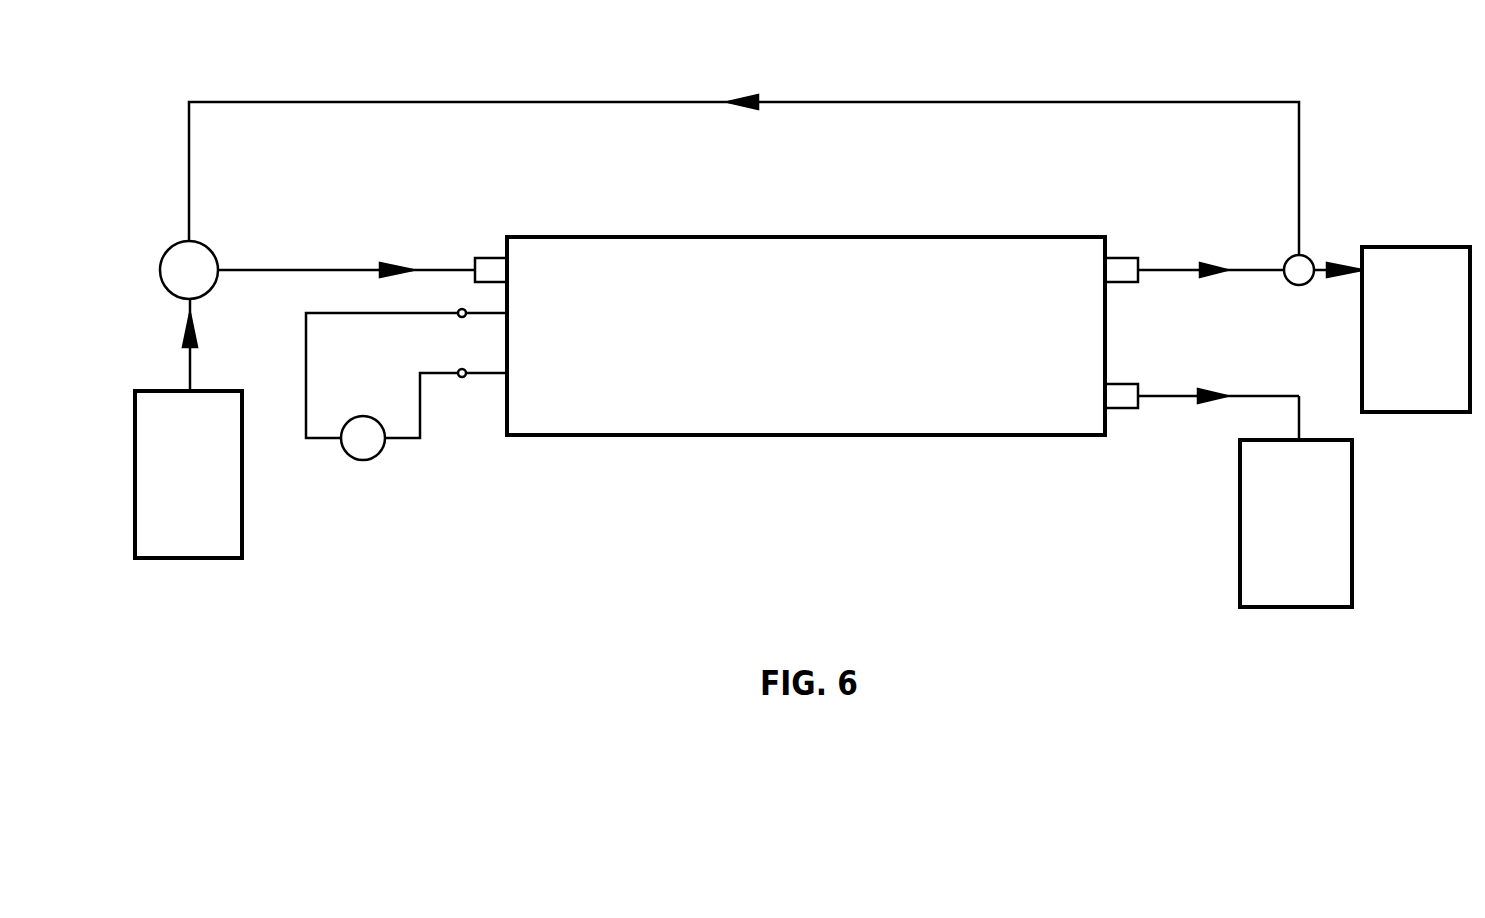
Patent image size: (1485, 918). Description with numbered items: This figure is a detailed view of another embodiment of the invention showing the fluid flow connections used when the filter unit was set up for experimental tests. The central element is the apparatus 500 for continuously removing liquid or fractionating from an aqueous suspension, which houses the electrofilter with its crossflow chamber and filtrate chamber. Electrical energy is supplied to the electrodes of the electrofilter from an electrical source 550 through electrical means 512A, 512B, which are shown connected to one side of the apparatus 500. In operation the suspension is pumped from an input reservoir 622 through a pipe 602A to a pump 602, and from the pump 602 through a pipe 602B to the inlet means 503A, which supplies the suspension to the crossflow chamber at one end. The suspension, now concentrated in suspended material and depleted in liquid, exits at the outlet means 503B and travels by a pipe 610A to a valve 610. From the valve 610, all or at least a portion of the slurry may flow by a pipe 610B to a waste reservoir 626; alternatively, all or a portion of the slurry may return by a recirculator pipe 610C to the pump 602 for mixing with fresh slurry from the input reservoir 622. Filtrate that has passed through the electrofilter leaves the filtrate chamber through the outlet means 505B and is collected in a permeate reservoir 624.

The apparatus 500 is at (907, 300).
The means for supplying a suspension 503A is at (487, 258).
The means removing a suspension reduced in liquid content 503B is at (1120, 258).
The outlet means for removing filtrate 505B is at (1118, 410).
The electrical means 512A is at (480, 317).
The electrical means 512B is at (485, 380).
The electrical source 550 is at (347, 458).
The pump 602 is at (212, 250).
The pipe 602A is at (190, 355).
The pipe 602B is at (330, 270).
The valve 610 is at (1306, 256).
The pipe 610A is at (1175, 275).
The pipe 610B is at (1330, 275).
The recirculator pipe 610C is at (905, 102).
The input reservoir 622 is at (215, 497).
The permeate reservoir 624 is at (1326, 540).
The waste reservoir 626 is at (1446, 357).